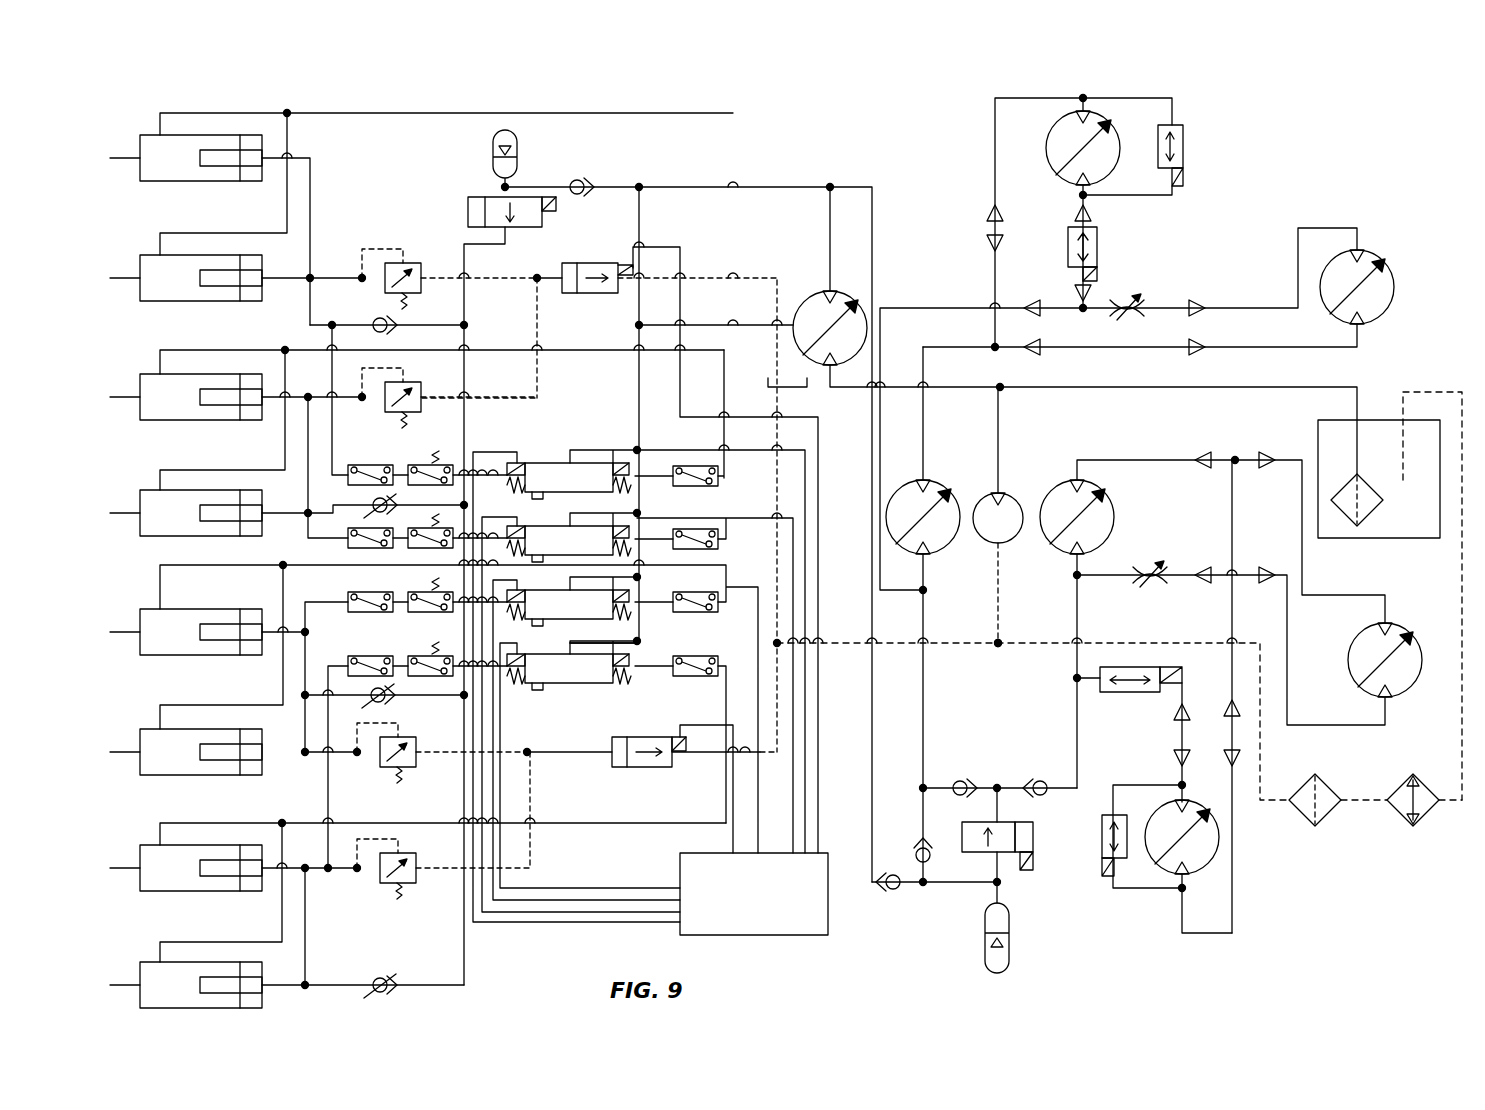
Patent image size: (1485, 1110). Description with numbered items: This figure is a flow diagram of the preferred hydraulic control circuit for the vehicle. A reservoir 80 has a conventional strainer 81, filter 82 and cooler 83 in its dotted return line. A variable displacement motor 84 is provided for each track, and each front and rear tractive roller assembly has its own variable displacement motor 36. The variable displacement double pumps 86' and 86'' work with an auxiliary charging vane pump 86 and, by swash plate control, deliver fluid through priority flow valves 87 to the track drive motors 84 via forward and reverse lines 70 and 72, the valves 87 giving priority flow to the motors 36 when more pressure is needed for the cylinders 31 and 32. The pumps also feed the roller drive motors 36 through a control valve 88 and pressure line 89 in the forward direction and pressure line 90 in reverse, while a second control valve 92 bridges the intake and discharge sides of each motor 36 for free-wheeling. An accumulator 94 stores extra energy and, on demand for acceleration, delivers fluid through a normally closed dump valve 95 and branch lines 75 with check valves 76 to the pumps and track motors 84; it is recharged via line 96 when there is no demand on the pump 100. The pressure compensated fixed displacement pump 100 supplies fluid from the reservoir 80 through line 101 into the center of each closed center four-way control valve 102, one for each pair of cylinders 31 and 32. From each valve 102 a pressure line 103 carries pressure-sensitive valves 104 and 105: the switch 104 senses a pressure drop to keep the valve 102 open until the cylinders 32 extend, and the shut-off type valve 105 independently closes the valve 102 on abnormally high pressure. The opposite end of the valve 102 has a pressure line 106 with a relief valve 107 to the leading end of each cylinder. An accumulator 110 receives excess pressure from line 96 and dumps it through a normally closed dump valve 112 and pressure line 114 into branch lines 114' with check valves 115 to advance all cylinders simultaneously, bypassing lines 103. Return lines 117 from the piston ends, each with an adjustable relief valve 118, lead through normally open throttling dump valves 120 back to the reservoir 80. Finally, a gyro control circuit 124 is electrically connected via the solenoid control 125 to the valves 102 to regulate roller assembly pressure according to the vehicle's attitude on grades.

The cylinder 31 is at (160, 421).
The longer cylinder 32 is at (160, 182).
The variable displacement motor 36 is at (1046, 148).
The forward line 70 is at (1388, 604).
The reverse line 72 is at (1278, 348).
The branch line 75 is at (980, 786).
The check valve 76 is at (958, 778).
The reservoir 80 is at (1395, 538).
The strainer 81 is at (1360, 518).
The filter 82 is at (1316, 826).
The cooler 83 is at (1418, 824).
The variable displacement motor 84 is at (1390, 262).
The auxiliary charging vane pump 86 is at (989, 517).
The variable displacement pump 86' is at (934, 614).
The variable displacement pump 86'' is at (1108, 634).
The priority flow valve 87 is at (1122, 292).
The control valve 88 is at (1116, 692).
The pressure line 89 is at (1182, 683).
The pressure line 90 is at (1232, 896).
The second control valve 92 is at (1183, 150).
The accumulator 94 is at (1009, 938).
The dump valve 95 is at (972, 822).
The line 96 is at (872, 776).
The pump 100 is at (822, 292).
The line 101 is at (639, 376).
The control valve 102 is at (545, 494).
The pressure line 103 is at (478, 466).
The pressure-sensitive valve 104 is at (412, 464).
The pressure-sensitive valve 105 is at (384, 464).
The pressure line 106 is at (648, 470).
The relief valve 107 is at (684, 486).
The accumulator 110 is at (493, 150).
The dump valve 112 is at (468, 208).
The pressure line 114 is at (495, 606).
The branch line 114' is at (338, 850).
The check valve 115 is at (388, 700).
The return line 117 is at (490, 282).
The adjustable relief valve 118 is at (406, 263).
The dump valve 120 is at (576, 262).
The gyro control circuit 124 is at (828, 915).
The solenoid control 125 is at (692, 646).